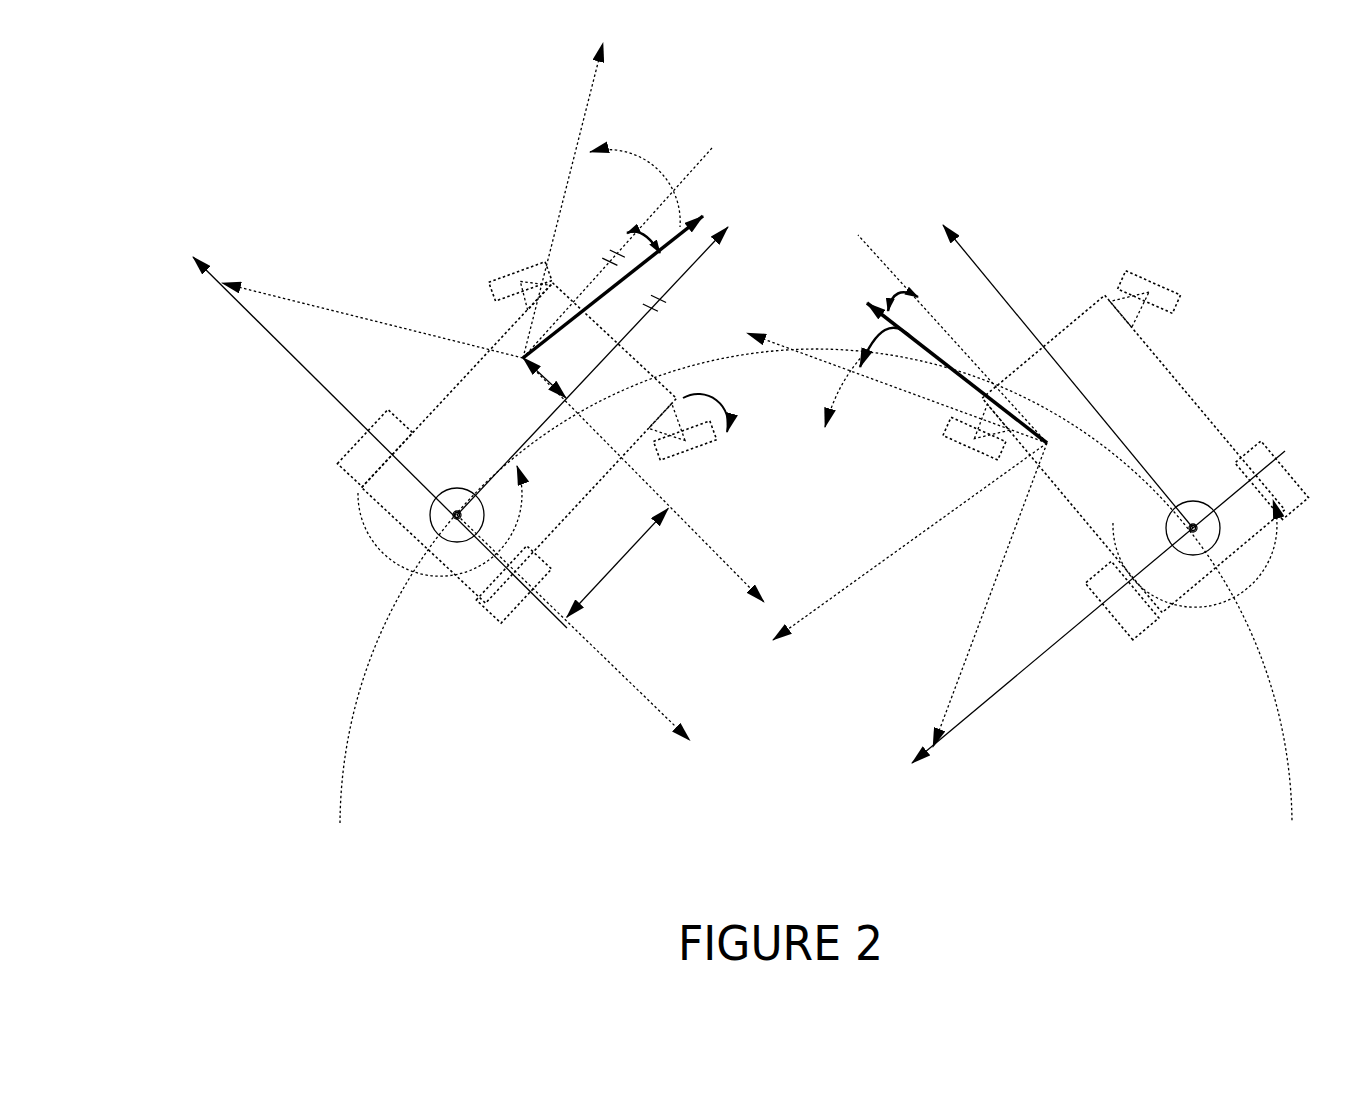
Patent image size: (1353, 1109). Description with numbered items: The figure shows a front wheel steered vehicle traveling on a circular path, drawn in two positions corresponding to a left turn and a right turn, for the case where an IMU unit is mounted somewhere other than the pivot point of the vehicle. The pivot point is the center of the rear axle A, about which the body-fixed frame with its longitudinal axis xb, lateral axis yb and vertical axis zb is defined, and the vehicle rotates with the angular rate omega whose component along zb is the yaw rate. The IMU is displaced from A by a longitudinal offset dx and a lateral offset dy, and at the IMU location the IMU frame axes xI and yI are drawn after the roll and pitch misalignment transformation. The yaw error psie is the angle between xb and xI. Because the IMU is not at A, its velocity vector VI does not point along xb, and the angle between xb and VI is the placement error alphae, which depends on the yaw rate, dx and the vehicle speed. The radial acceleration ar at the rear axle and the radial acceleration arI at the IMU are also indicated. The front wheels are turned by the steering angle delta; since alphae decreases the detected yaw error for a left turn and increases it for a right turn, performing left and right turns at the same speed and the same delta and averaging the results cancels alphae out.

The center of the rear axle A is at (825, 506).
The body-fixed frame z-axis zb is at (820, 549).
The lateral offset of the IMU dy is at (530, 390).
The longitudinal offset of the IMU dx is at (618, 562).
The radial acceleration ar is at (587, 629).
The radial acceleration at the IMU arI is at (785, 519).
The body-fixed frame x-axis xb is at (825, 358).
The body-fixed frame y-axis yb is at (723, 537).
The IMU frame x-axis xI is at (785, 243).
The IMU frame y-axis yI is at (634, 503).
The velocity vector of IMU VI is at (837, 269).
The yaw error due to placement of IMU alphae is at (772, 263).
The yaw error psie is at (751, 296).
The steering angle delta is at (705, 401).
The angular rate of the body-fixed frame omega is at (1281, 589).